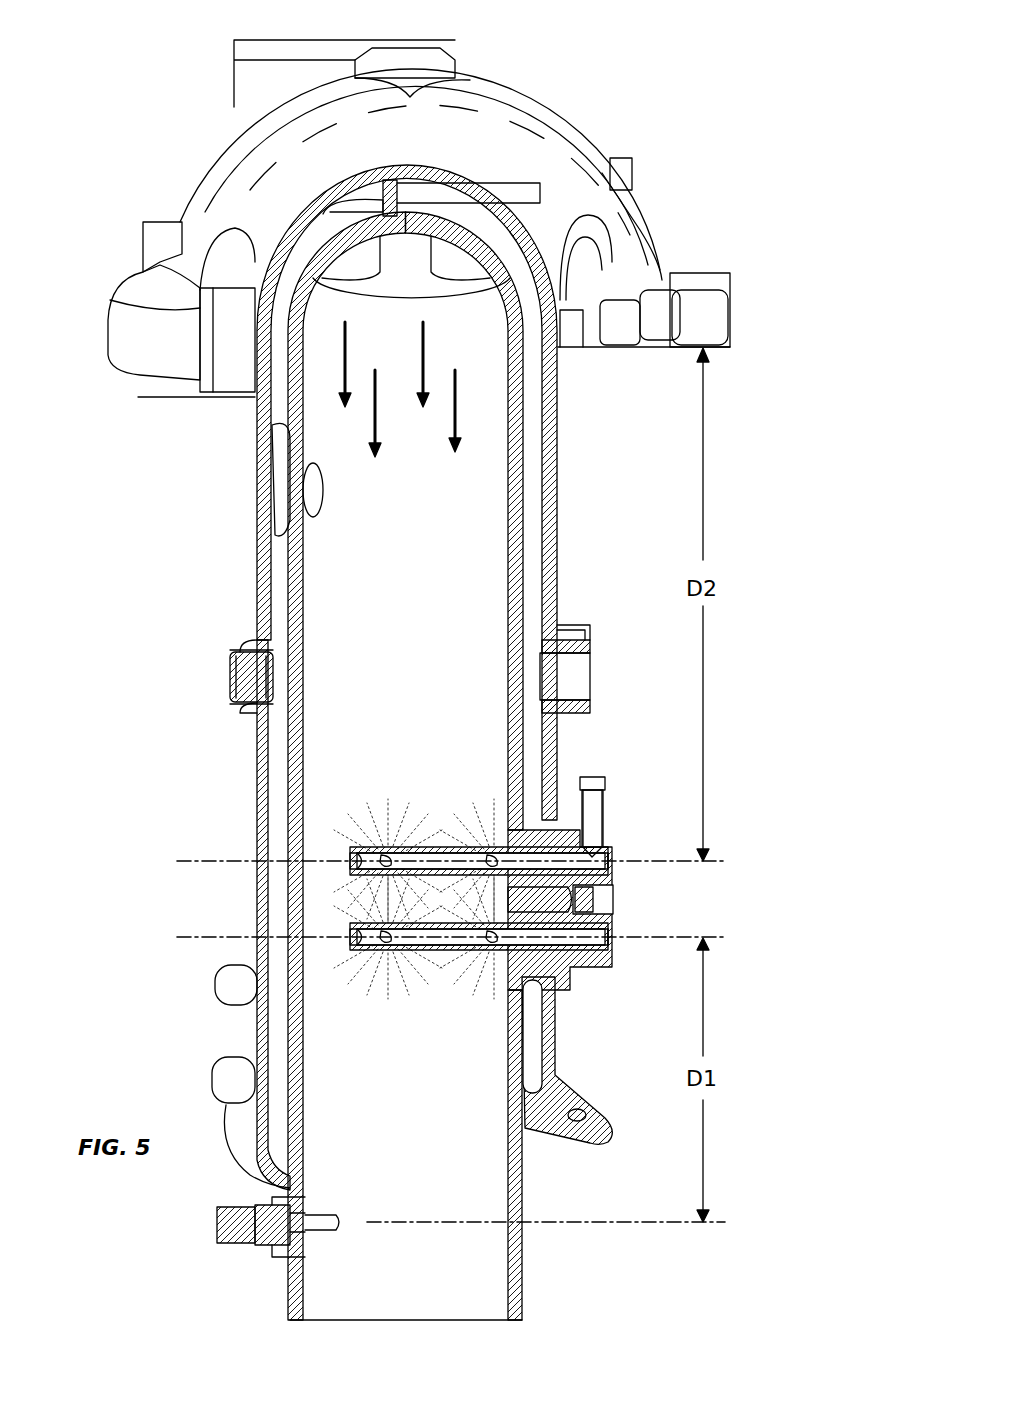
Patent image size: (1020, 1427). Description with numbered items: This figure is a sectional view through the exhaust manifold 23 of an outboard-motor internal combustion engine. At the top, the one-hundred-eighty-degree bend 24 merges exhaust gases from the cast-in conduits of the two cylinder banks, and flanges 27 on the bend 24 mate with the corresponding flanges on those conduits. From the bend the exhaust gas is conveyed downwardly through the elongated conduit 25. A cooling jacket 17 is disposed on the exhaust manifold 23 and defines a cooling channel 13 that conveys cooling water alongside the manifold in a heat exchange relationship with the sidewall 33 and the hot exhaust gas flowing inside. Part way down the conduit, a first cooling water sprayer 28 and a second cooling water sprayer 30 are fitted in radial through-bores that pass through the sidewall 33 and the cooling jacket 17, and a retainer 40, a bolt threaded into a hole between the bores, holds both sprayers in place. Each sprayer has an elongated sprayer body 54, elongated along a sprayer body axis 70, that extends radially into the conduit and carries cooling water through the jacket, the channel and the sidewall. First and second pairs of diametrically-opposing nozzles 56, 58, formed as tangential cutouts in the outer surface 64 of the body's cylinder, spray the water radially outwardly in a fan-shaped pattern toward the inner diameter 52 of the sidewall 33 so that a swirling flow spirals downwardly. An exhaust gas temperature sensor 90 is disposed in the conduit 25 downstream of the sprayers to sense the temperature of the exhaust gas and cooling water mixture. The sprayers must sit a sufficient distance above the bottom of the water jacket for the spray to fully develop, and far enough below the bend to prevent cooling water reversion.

The cooling channel 13 is at (534, 560).
The cooling jacket 17 is at (268, 466).
The exhaust manifold 23 is at (637, 112).
The 180-degree bend 24 is at (513, 116).
The elongated conduit 25 is at (300, 583).
The flanges 27 is at (707, 283).
The first cooling water sprayer 28 is at (624, 824).
The second cooling water sprayer 30 is at (625, 970).
The sidewall 33 is at (516, 421).
The retainer 40 is at (595, 900).
The inner diameter 52 is at (506, 527).
The sprayer body 54 is at (424, 846).
The first pair of diametrically-opposing nozzles 56 is at (388, 854).
The second pair of diametrically-opposing nozzles 58 is at (495, 848).
The outer surface 64 is at (408, 847).
The sprayer body axis 70 is at (212, 858).
The exhaust gas temperature sensor 90 is at (252, 1236).